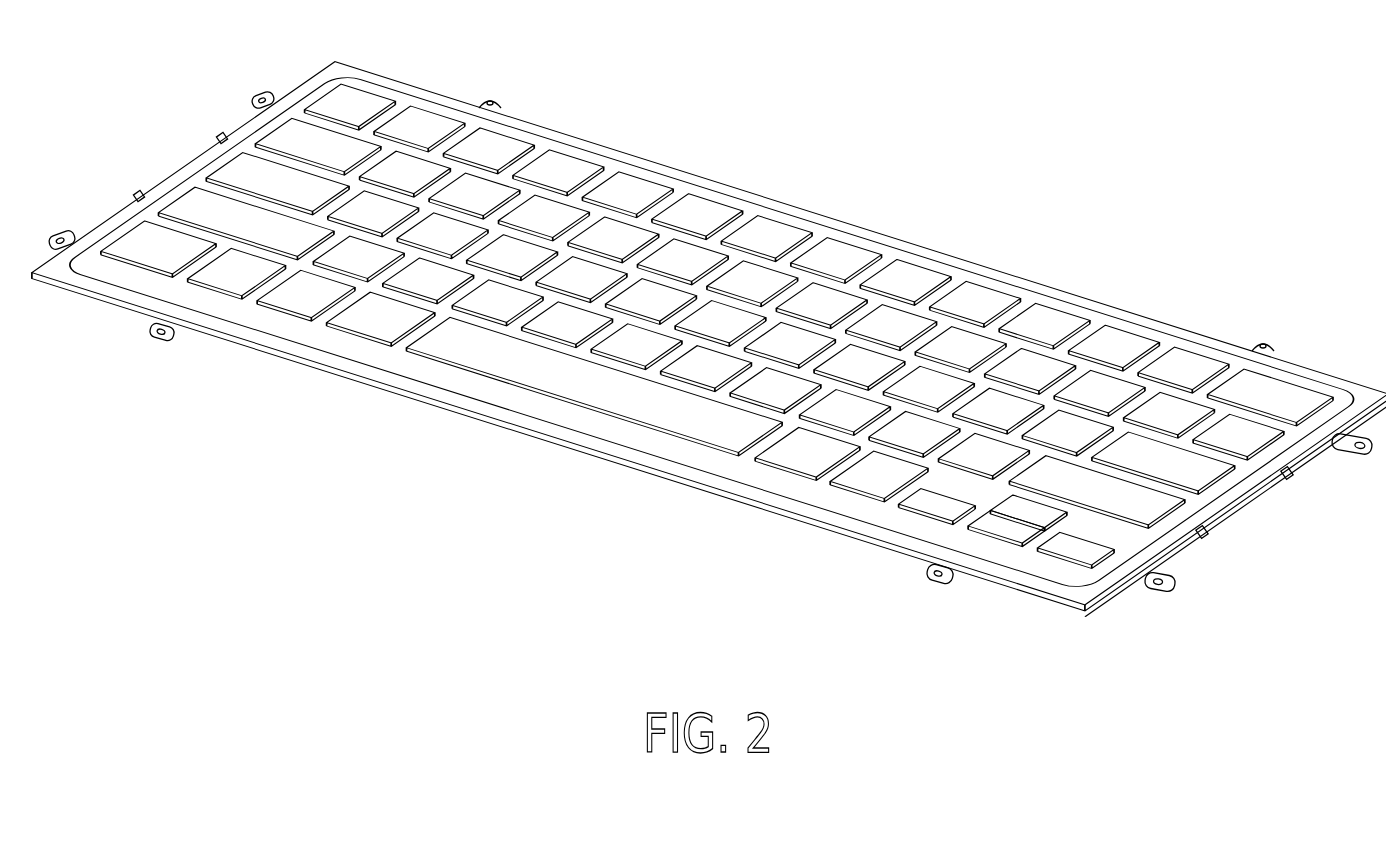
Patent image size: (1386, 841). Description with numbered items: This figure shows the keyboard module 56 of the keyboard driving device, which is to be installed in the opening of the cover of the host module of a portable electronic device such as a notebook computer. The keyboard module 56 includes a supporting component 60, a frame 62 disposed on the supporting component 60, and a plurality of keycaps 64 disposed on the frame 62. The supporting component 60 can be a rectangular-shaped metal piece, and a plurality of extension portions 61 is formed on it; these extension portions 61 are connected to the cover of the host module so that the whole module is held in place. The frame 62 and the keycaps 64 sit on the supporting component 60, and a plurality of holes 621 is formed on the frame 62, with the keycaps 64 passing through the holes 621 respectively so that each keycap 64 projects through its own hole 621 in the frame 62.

The keyboard module 56 is at (933, 75).
The supporting component 60 is at (1346, 462).
The extension portions 61 is at (1143, 590).
The frame 62 is at (1300, 372).
The holes 621 is at (1085, 322).
The keycaps 64 is at (913, 277).